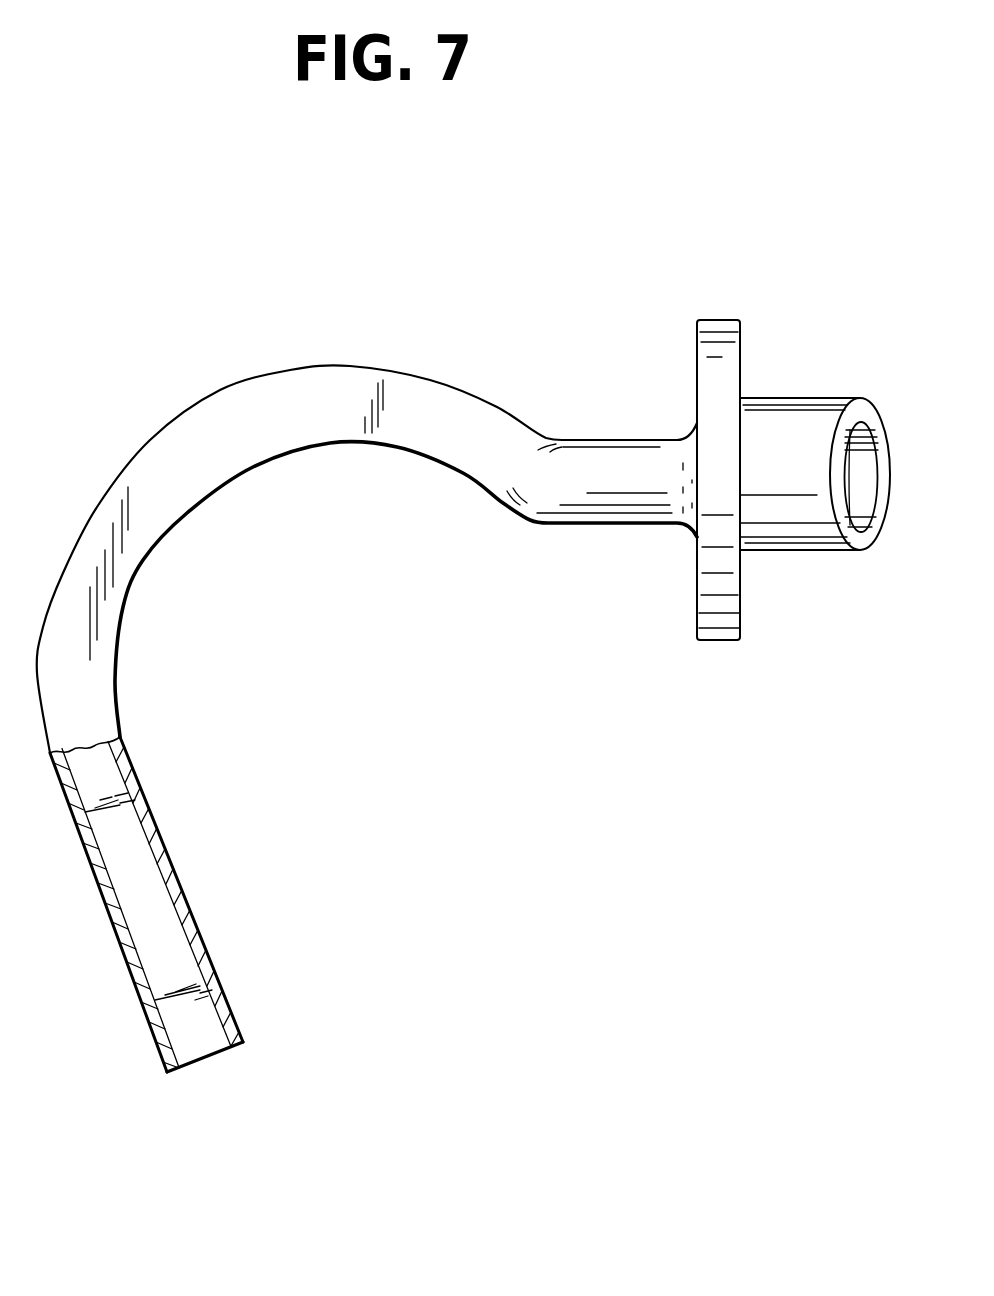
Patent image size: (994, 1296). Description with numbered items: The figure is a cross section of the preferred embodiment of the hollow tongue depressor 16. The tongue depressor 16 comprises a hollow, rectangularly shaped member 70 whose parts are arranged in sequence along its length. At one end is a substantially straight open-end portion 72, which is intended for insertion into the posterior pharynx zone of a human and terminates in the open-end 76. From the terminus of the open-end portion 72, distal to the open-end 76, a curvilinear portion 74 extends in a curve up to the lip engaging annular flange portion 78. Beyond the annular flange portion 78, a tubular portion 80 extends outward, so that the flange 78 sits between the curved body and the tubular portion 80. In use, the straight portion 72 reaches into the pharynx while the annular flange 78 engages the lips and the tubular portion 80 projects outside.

The tongue depressor 16 is at (124, 628).
The hollow, rectangularly shaped member 70 is at (293, 390).
The curvilinear portion 74 is at (148, 443).
The open-end portion 72 is at (200, 918).
The open-end 76 is at (207, 1063).
The lip engaging annular flange portion 78 is at (722, 323).
The tubular portion 80 is at (800, 397).